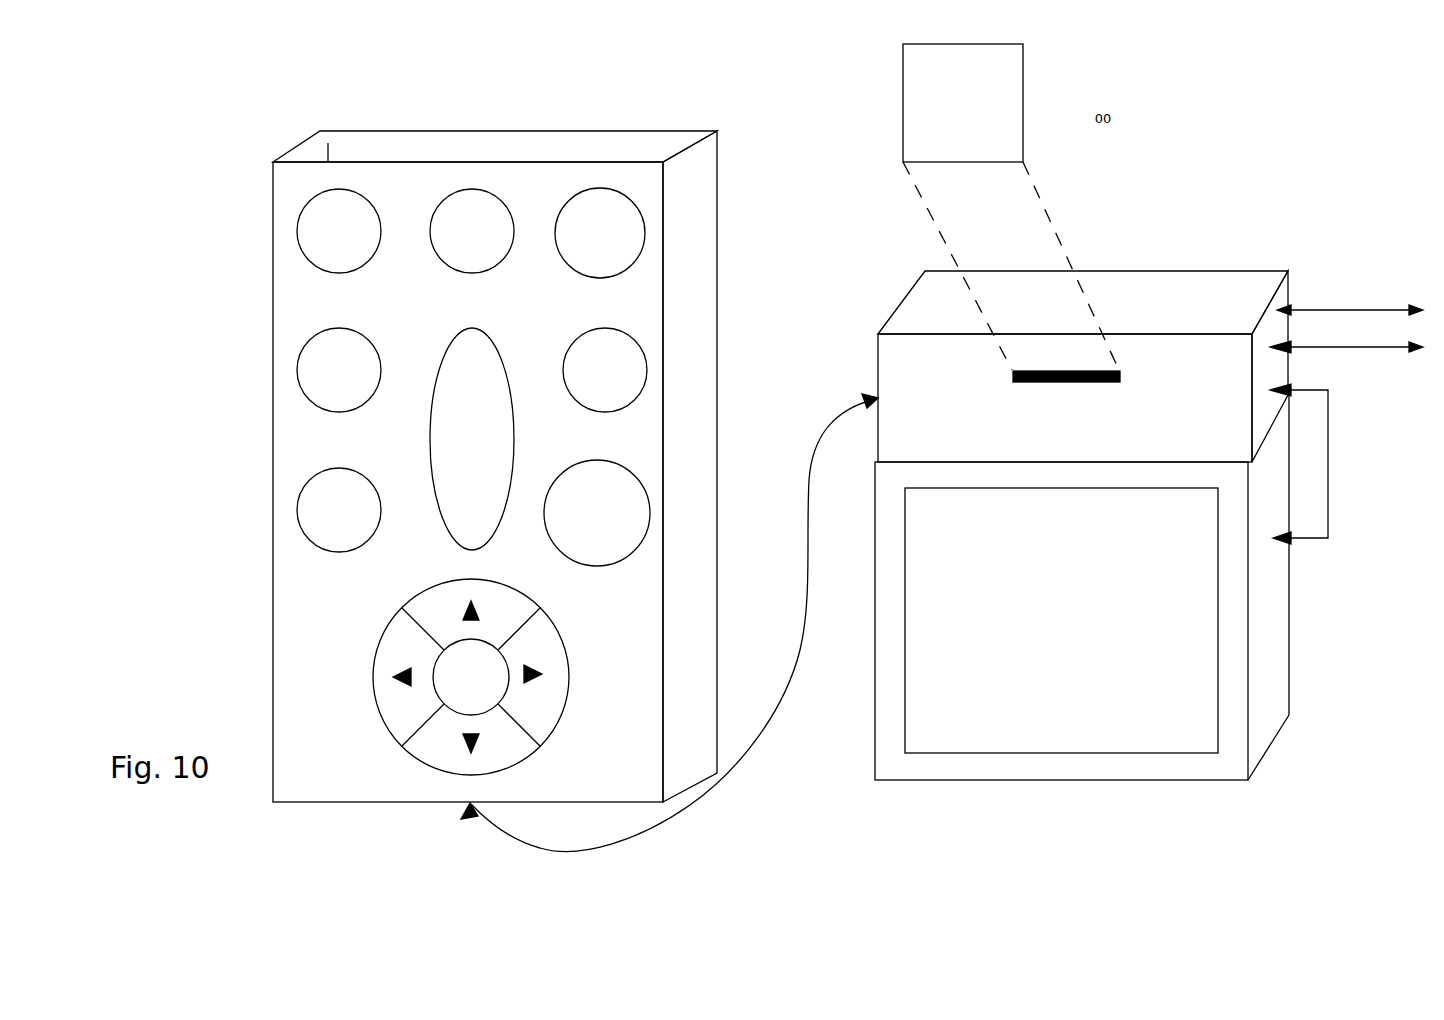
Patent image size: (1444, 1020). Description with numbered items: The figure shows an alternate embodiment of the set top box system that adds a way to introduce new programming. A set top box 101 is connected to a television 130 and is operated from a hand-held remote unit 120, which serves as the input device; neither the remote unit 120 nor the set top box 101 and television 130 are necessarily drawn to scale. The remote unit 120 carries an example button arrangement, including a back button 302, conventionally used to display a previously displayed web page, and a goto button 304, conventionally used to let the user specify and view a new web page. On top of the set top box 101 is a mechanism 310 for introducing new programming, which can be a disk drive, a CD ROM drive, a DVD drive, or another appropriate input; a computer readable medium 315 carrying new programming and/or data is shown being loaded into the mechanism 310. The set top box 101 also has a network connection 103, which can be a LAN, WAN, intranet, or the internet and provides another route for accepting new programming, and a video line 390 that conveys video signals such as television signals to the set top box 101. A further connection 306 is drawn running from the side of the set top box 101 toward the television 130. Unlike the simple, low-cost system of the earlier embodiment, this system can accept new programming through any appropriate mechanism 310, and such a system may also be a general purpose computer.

The remote unit 120 is at (240, 188).
The back button 302 is at (302, 352).
The goto button 304 is at (302, 486).
The computer readable medium 315 is at (1023, 100).
The mechanism for introducing new programming 310 is at (1110, 362).
The set top box 101 is at (1228, 270).
The network connection 103 is at (1347, 282).
The video line 390 is at (1406, 352).
The television connection 306 is at (1330, 505).
The television 130 is at (1289, 670).